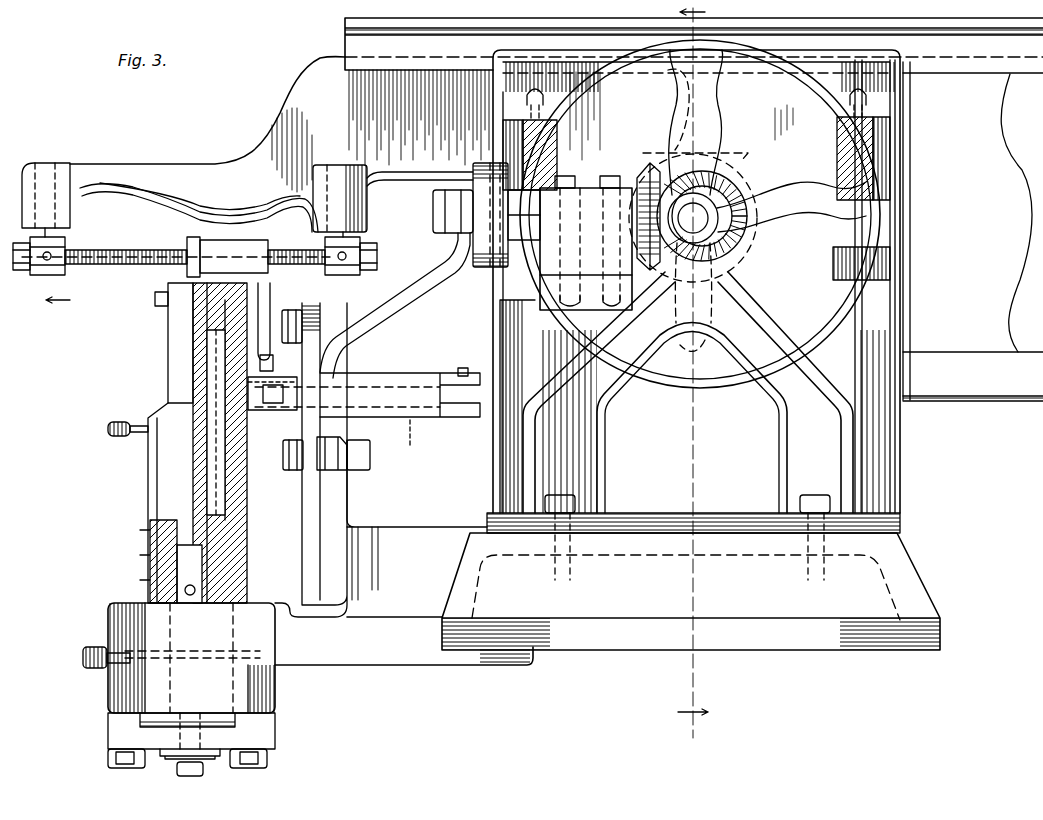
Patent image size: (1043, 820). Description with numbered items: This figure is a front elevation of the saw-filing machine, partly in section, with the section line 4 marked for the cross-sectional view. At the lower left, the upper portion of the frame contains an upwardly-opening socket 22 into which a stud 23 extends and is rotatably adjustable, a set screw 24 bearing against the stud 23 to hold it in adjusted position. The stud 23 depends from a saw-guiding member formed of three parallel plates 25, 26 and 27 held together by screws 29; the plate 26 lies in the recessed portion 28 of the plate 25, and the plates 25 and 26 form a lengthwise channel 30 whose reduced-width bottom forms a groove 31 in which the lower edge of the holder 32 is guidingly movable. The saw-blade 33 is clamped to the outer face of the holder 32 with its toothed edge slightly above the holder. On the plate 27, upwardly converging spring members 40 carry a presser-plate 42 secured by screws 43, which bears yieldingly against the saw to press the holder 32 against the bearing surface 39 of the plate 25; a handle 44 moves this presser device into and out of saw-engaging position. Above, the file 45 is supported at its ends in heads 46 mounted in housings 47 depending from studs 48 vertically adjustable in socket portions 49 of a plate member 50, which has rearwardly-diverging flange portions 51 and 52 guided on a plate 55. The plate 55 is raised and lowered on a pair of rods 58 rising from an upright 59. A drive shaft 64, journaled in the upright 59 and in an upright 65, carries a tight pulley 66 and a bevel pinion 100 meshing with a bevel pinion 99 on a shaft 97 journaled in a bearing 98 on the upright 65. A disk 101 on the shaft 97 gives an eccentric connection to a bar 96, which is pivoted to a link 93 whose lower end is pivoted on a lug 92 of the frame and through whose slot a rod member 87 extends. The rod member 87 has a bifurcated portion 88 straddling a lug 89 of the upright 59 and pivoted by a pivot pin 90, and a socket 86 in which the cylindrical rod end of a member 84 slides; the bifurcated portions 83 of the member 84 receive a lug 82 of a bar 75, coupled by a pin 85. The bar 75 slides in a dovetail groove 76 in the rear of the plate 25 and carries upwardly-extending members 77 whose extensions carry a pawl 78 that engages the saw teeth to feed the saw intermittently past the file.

The section line 4 is at (372, 370).
The socket 22 is at (258, 688).
The stud 23 is at (150, 722).
The set screw 24 is at (85, 660).
The plate 25 is at (240, 584).
The plate 26 is at (192, 520).
The plate 27 is at (150, 556).
The recessed portion 28 is at (242, 560).
The screws 29 is at (186, 603).
The channel 30 is at (238, 505).
The groove 31 is at (232, 535).
The holder 32 is at (206, 452).
The saw-blade 33 is at (192, 382).
The bearing surface 39 is at (235, 282).
The spring members 40 is at (147, 445).
The presser-plate 42 is at (182, 302).
The screws 43 is at (155, 298).
The handle 44 is at (107, 430).
The file 45 is at (68, 275).
The heads 46 is at (362, 248).
The housings 47 is at (40, 276).
The studs 48 is at (60, 175).
The socket portions 49 is at (68, 192).
The plate member 50 is at (295, 100).
The flange portion 51 is at (1010, 85).
The flange portion 52 is at (985, 340).
The plate 55 is at (1022, 62).
The rods 58 is at (880, 322).
The upright 59 is at (488, 492).
The drive shaft 64 is at (700, 275).
The upright 65 is at (600, 460).
The tight pulley 66 is at (730, 385).
The bar 75 is at (228, 440).
The dovetail groove 76 is at (228, 452).
The upwardly-extending members 77 is at (268, 312).
The pawl 78 is at (192, 265).
The lug 82 is at (275, 410).
The bifurcated portions 83 is at (273, 380).
The member 84 is at (410, 376).
The pin 85 is at (193, 404).
The socket 86 is at (370, 456).
The rod member 87 is at (405, 410).
The bifurcated portion 88 is at (468, 417).
The lug 89 is at (447, 417).
The pivot pin 90 is at (463, 368).
The lug 92 is at (347, 512).
The link 93 is at (328, 423).
The bar 96 is at (448, 265).
The shaft 97 is at (616, 190).
The bearing 98 is at (580, 176).
The bevel pinion 99 is at (660, 290).
The bevel pinion 100 is at (732, 255).
The disk 101 is at (480, 268).